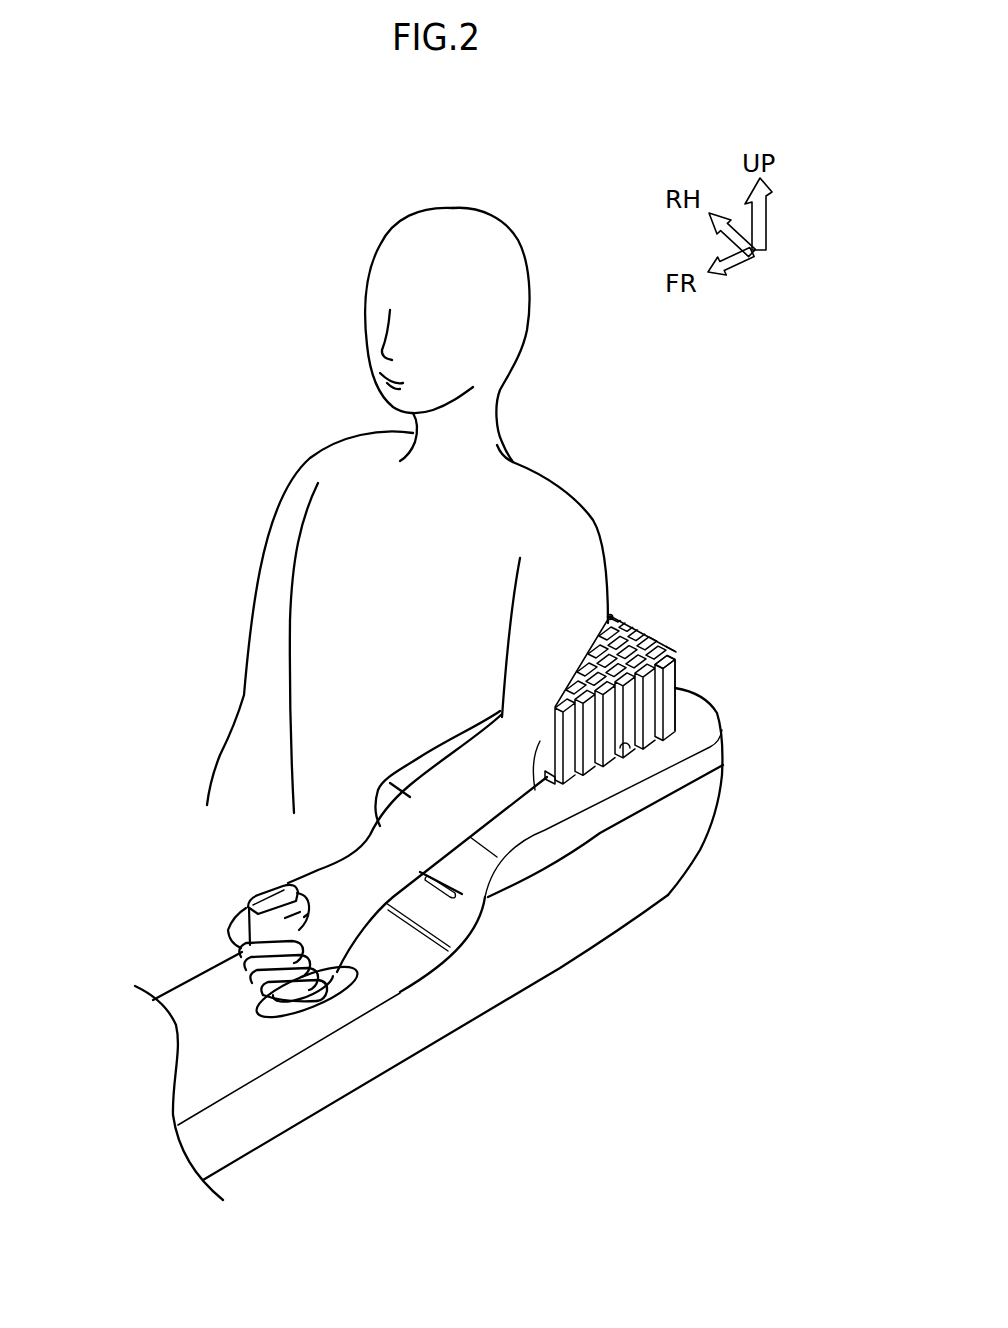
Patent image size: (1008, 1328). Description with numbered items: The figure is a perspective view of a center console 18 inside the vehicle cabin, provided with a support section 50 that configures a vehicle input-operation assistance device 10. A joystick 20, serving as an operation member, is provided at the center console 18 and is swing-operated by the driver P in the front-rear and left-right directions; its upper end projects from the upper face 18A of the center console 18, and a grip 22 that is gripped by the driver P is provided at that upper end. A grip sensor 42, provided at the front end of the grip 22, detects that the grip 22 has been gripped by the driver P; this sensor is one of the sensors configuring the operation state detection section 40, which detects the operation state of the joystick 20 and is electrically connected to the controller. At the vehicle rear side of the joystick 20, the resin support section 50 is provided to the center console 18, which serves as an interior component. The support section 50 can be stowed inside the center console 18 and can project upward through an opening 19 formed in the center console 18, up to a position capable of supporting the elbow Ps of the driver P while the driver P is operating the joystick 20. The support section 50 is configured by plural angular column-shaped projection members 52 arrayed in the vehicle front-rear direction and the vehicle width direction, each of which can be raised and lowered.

The driver P is at (450, 237).
The elbow Ps is at (535, 790).
The vehicle input-operation assistance device 10 is at (689, 802).
The center console 18 is at (401, 965).
The upper face 18A is at (188, 1003).
The opening 19 is at (625, 752).
The joystick 20 is at (248, 849).
The grip 22 is at (315, 896).
The operation state detection section 40 is at (358, 1055).
The grip sensor 42 is at (263, 945).
The support section 50 is at (689, 802).
The projection members 52 is at (668, 702).